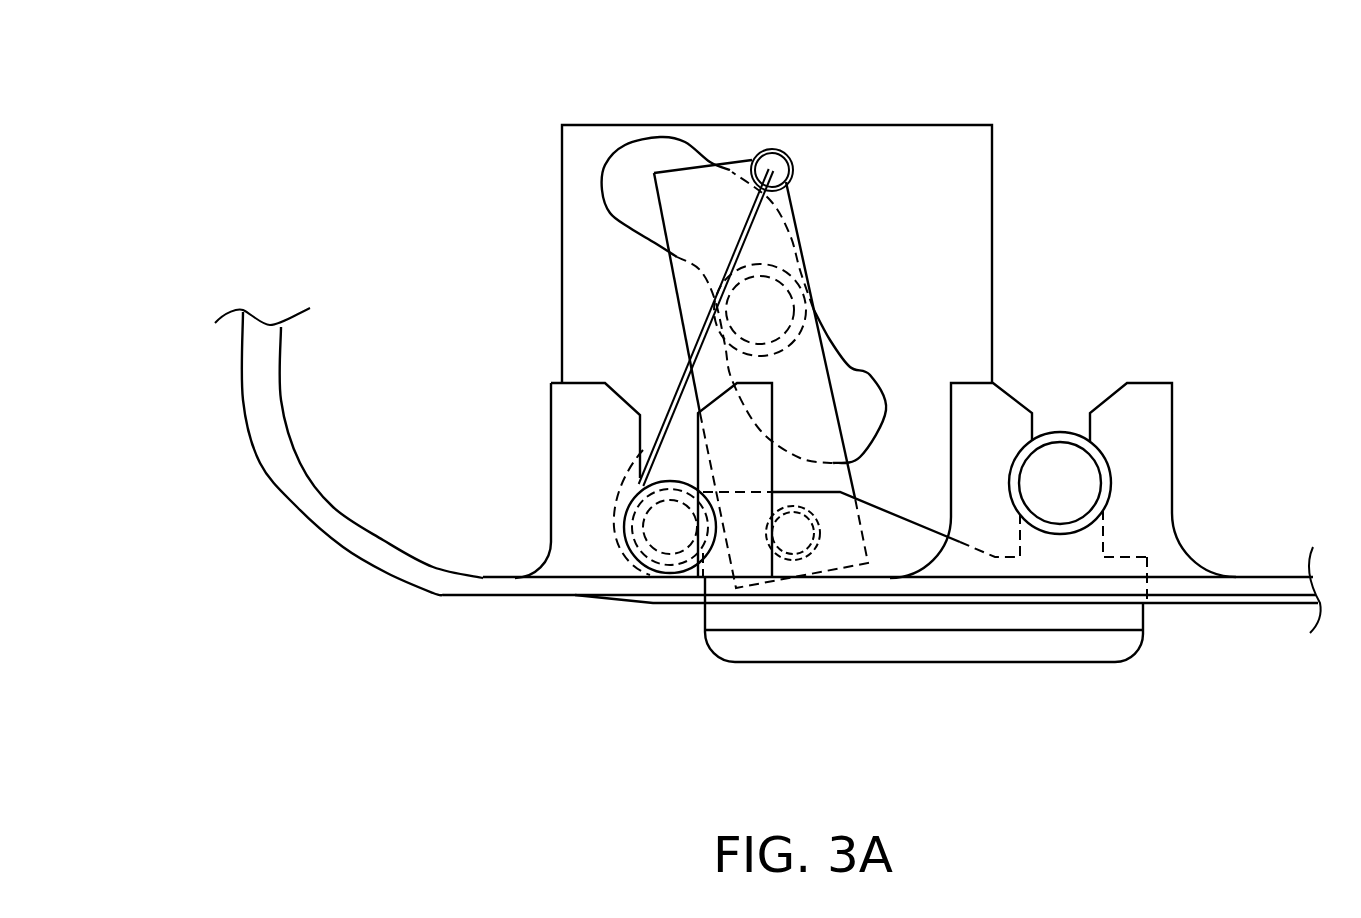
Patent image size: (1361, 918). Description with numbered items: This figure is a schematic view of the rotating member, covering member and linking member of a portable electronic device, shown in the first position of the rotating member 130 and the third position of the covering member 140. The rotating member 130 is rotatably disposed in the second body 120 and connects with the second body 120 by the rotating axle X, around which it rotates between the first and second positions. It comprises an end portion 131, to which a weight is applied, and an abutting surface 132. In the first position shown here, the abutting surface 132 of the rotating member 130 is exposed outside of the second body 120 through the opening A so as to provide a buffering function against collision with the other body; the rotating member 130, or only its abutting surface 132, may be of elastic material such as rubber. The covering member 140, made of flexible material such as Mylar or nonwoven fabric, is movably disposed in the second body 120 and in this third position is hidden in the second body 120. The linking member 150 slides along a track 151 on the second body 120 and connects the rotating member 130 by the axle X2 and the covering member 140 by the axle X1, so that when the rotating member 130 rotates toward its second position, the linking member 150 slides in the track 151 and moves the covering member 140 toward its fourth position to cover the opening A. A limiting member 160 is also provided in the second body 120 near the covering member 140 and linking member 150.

The second body 120 is at (253, 388).
The rotating member 130 is at (1073, 752).
The end portion 131 is at (703, 553).
The abutting surface 132 is at (848, 662).
The covering member 140 is at (677, 370).
The linking member 150 is at (803, 232).
The track 151 is at (645, 160).
The limiting member 160 is at (670, 527).
The rotating axle X is at (1060, 493).
The axle X1 is at (775, 163).
The axle X2 is at (793, 533).
The opening A is at (1150, 606).